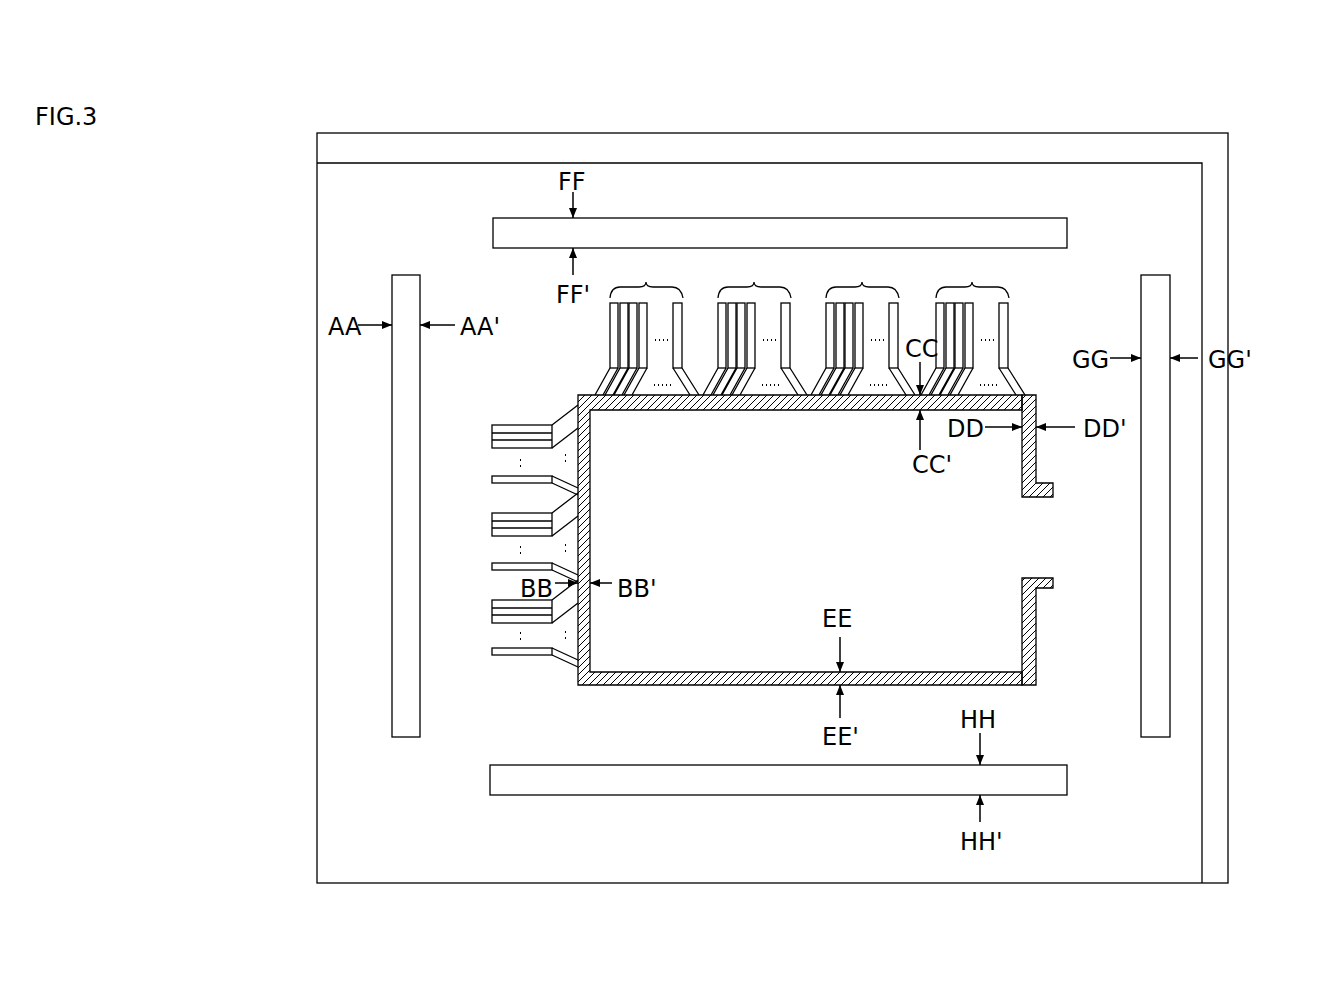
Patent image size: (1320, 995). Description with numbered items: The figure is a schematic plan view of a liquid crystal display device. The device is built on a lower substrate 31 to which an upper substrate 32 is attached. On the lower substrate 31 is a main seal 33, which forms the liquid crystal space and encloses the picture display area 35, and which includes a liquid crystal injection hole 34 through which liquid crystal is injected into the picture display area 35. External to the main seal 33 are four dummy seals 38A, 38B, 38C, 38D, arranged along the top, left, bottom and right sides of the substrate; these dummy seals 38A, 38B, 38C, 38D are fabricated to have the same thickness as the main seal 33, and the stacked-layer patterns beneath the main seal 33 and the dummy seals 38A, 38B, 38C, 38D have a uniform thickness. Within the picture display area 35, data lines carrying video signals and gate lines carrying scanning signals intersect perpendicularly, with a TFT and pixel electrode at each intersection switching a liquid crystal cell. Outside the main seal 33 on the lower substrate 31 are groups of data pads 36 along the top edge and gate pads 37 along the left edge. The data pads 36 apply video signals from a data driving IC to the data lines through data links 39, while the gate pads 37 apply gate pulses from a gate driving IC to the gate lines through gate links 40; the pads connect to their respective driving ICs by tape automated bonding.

The lower substrate 31 is at (1228, 160).
The upper substrate 32 is at (1202, 210).
The main seal 33 is at (1038, 458).
The liquid crystal injection hole 34 is at (1035, 538).
The picture display area 35 is at (745, 652).
The data pads 36 is at (810, 323).
The gate pads 37 is at (490, 427).
The dummy seal 38A is at (832, 225).
The dummy seal 38B is at (405, 400).
The dummy seal 38C is at (787, 780).
The dummy seal 38D is at (1160, 433).
The data links 39 is at (570, 355).
The gate links 40 is at (585, 700).